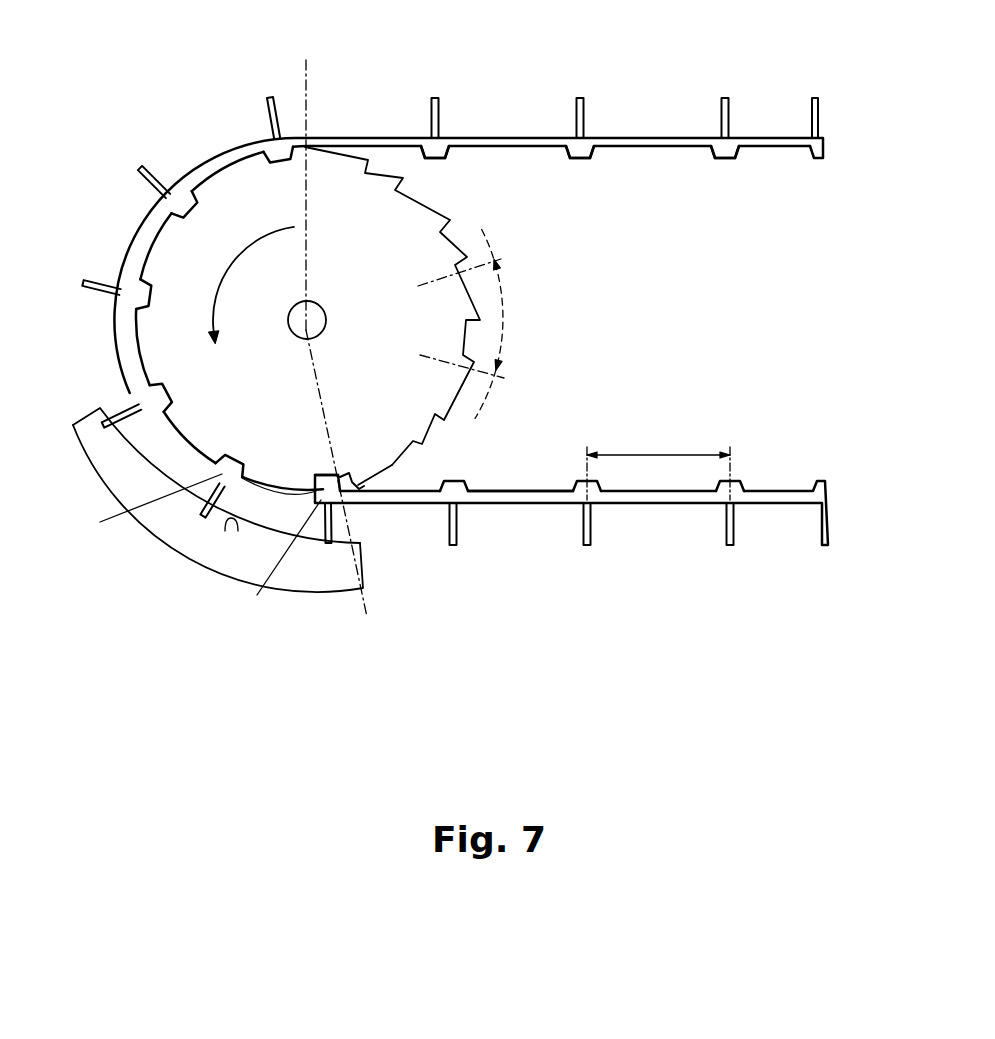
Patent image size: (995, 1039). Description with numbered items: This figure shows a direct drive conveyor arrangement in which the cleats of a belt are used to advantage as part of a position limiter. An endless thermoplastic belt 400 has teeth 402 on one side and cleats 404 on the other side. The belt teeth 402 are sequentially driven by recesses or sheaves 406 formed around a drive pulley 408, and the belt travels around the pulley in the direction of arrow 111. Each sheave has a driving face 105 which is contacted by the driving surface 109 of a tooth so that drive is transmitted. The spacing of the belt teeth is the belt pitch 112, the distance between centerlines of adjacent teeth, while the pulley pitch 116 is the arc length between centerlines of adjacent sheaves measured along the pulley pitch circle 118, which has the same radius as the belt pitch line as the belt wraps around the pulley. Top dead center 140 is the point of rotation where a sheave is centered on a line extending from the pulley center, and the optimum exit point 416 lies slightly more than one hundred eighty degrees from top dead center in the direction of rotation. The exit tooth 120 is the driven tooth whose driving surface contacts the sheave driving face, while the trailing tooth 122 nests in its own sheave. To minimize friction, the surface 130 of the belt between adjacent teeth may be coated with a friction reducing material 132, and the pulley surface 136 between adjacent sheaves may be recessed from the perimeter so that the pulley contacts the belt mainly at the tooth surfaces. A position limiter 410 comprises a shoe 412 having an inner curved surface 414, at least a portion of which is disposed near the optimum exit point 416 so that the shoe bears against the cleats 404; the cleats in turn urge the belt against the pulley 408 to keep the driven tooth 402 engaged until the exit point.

The endless thermoplastic belt 400 is at (614, 120).
The teeth 402 is at (583, 155).
The cleats 404 is at (431, 108).
The sheaves 406 is at (467, 277).
The drive pulley 408 is at (358, 268).
The arrow 111 is at (245, 252).
The pulley pitch 116 is at (503, 316).
The pulley pitch circle 118 is at (488, 252).
The top dead center 140 is at (309, 87).
The optimum exit point 416 is at (366, 600).
The surface of the belt between adjacent teeth 130 is at (556, 490).
The friction reducing material 132 is at (494, 490).
The driving face 105 is at (218, 462).
The belt pitch 112 is at (672, 453).
The exit tooth 120 is at (343, 470).
The trailing tooth 122 is at (234, 464).
The surface between adjacent sheaves 136 is at (396, 470).
The driving surface 109 is at (193, 544).
The position limiter 410 is at (185, 562).
The shoe 412 is at (172, 540).
The inner curved surface 414 is at (228, 531).